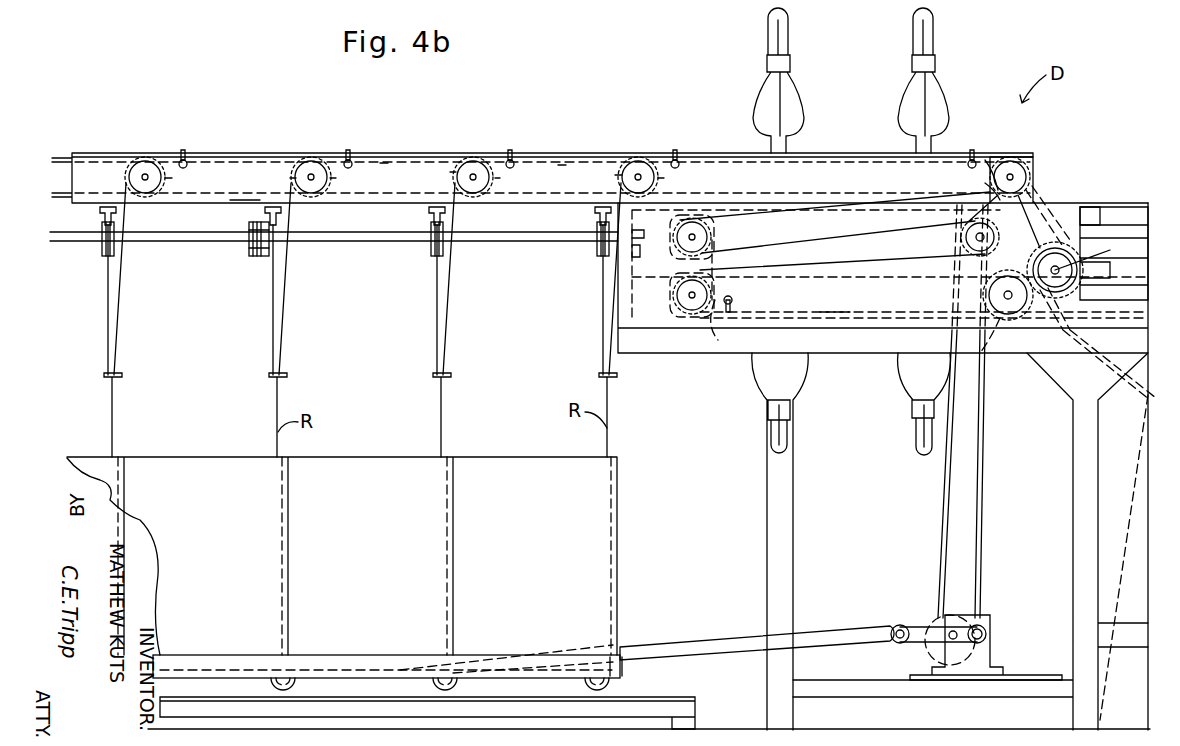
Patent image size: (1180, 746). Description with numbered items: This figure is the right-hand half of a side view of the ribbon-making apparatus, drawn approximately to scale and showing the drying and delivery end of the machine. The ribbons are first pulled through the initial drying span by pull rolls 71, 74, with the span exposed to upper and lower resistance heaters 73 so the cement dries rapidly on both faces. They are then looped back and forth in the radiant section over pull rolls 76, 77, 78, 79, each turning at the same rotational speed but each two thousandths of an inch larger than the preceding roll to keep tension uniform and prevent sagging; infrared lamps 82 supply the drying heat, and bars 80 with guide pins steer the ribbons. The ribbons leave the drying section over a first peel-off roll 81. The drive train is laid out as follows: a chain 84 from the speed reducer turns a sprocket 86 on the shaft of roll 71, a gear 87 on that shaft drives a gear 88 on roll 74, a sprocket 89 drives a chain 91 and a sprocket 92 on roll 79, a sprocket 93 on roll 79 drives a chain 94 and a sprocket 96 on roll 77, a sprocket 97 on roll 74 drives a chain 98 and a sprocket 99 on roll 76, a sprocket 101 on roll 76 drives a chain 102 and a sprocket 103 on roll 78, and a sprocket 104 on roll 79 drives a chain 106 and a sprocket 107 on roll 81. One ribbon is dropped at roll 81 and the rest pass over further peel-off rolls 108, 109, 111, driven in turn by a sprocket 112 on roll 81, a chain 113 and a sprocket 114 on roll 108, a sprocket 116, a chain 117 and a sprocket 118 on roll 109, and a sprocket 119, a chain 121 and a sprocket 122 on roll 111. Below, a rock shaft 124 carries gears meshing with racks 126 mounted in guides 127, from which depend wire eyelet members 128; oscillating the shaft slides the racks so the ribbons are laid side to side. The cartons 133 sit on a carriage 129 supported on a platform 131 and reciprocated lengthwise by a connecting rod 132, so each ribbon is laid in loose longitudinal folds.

The pull roll 71 is at (1068, 262).
The resistance heater 73 is at (1150, 290).
The pull roll 74 is at (985, 298).
The pull roll 76 is at (703, 290).
The pull roll 77 is at (972, 242).
The pull roll 78 is at (700, 230).
The pull roll 79 is at (1013, 172).
The bar 80 is at (186, 160).
The first peel-off roll 81 is at (635, 163).
The infrared lamp 82 is at (772, 90).
The chain 84 is at (1146, 395).
The sprocket 86 is at (1084, 272).
The gear 87 is at (1074, 302).
The gear 88 is at (1003, 322).
The sprocket 89 is at (1044, 240).
The chain 91 is at (1056, 210).
The sprocket 92 is at (1042, 188).
The sprocket 93 is at (985, 185).
The chain 94 is at (938, 206).
The sprocket 96 is at (932, 236).
The sprocket 97 is at (962, 342).
The chain 98 is at (830, 312).
The sprocket 99 is at (716, 318).
The sprocket 101 is at (676, 270).
The chain 102 is at (716, 262).
The sprocket 103 is at (680, 255).
The sprocket 104 is at (988, 160).
The chain 106 is at (812, 170).
The sprocket 107 is at (660, 182).
The peel-off roll 108 is at (470, 165).
The peel-off roll 109 is at (313, 165).
The peel-off roll 111 is at (146, 165).
The sprocket 112 is at (618, 178).
The chain 113 is at (562, 165).
The sprocket 114 is at (497, 182).
The sprocket 116 is at (452, 172).
The chain 117 is at (384, 163).
The sprocket 118 is at (333, 182).
The sprocket 119 is at (292, 178).
The chain 121 is at (247, 192).
The sprocket 122 is at (168, 182).
The rock shaft 124 is at (90, 237).
The rack 126 is at (100, 232).
The guide 127 is at (98, 210).
The wire eyelet member 128 is at (437, 345).
The carriage 129 is at (412, 657).
The platform 131 is at (360, 717).
The connecting rod 132 is at (740, 648).
The carton 133 is at (183, 552).